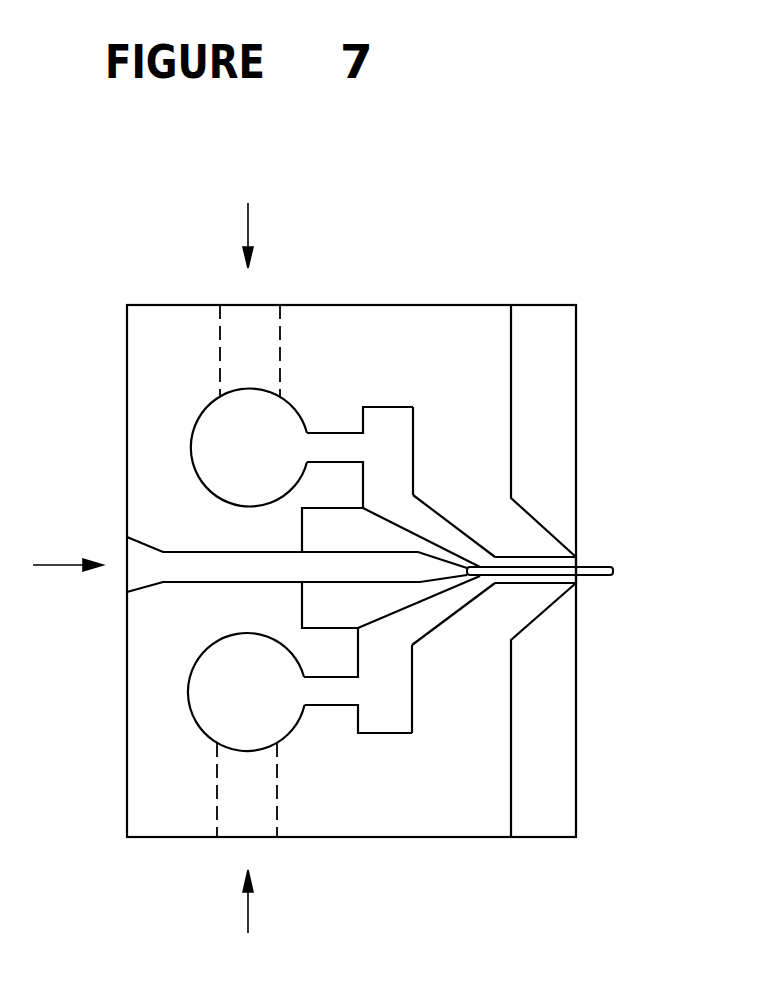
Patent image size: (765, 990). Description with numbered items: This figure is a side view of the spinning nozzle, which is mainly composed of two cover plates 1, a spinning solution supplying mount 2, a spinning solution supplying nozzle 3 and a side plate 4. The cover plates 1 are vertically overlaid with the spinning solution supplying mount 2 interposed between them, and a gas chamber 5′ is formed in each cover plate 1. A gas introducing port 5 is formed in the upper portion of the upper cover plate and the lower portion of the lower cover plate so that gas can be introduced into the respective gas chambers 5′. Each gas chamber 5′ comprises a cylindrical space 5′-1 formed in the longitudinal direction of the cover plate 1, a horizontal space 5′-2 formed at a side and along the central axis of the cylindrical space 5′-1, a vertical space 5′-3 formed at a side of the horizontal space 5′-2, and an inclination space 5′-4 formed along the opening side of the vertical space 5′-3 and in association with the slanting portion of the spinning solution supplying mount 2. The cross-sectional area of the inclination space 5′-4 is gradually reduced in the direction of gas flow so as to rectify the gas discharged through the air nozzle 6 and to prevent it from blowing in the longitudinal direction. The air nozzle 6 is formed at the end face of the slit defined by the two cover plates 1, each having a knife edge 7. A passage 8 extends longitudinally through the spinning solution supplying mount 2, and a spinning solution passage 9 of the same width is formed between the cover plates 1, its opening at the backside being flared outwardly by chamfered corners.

The cover plate 1 is at (155, 365).
The spinning solution supplying mount 2 is at (353, 608).
The spinning solution supplying nozzle 3 is at (615, 577).
The side plate 4 is at (545, 343).
The gas introducing port 5 is at (243, 358).
The gas chamber 5′ is at (205, 453).
The cylindrical space 5′-1 is at (267, 428).
The horizontal space 5′-2 is at (333, 452).
The vertical space 5′-3 is at (378, 457).
The inclination space 5′-4 is at (480, 487).
The air nozzle 6 is at (578, 558).
The knife edge 7 is at (522, 541).
The passage 8 is at (355, 572).
The spinning solution passage 9 is at (190, 572).